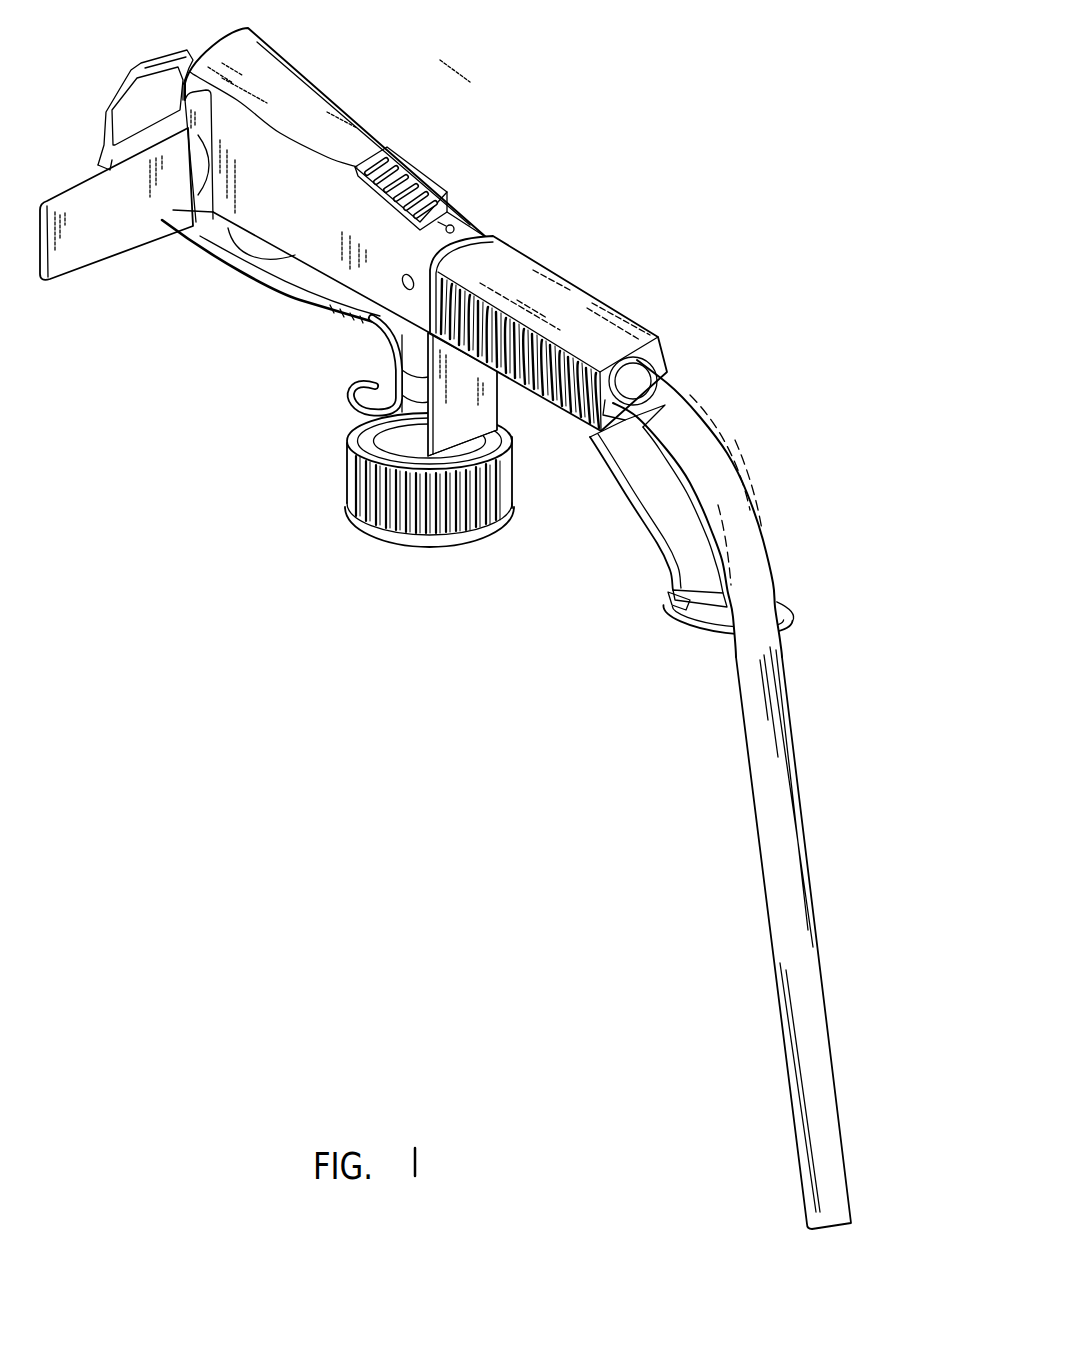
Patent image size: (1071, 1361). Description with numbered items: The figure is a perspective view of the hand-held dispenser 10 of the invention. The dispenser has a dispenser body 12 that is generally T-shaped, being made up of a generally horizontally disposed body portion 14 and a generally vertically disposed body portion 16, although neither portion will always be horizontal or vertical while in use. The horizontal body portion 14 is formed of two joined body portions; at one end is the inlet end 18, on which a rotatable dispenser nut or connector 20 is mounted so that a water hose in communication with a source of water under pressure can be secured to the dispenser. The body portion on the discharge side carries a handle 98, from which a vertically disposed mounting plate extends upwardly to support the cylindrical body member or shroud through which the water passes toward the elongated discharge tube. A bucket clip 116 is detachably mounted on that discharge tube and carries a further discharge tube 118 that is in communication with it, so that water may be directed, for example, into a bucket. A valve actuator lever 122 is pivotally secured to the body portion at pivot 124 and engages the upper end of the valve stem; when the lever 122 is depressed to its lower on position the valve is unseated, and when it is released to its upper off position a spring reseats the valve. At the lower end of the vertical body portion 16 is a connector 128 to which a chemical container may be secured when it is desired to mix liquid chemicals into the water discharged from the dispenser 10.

The hand-held dispenser 10 is at (548, 218).
The dispenser body 12 is at (290, 297).
The horizontally disposed body portion 14 is at (570, 268).
The vertically disposed body portion 16 is at (340, 433).
The inlet end 18 is at (95, 137).
The rotatable dispenser nut or connector 20 is at (145, 68).
The handle 98 is at (247, 268).
The bucket clip 116 is at (613, 330).
The discharge tube 118 is at (766, 761).
The valve actuator lever 122 is at (352, 103).
The pivot of valve actuator lever 124 is at (405, 290).
The connector 128 is at (463, 518).